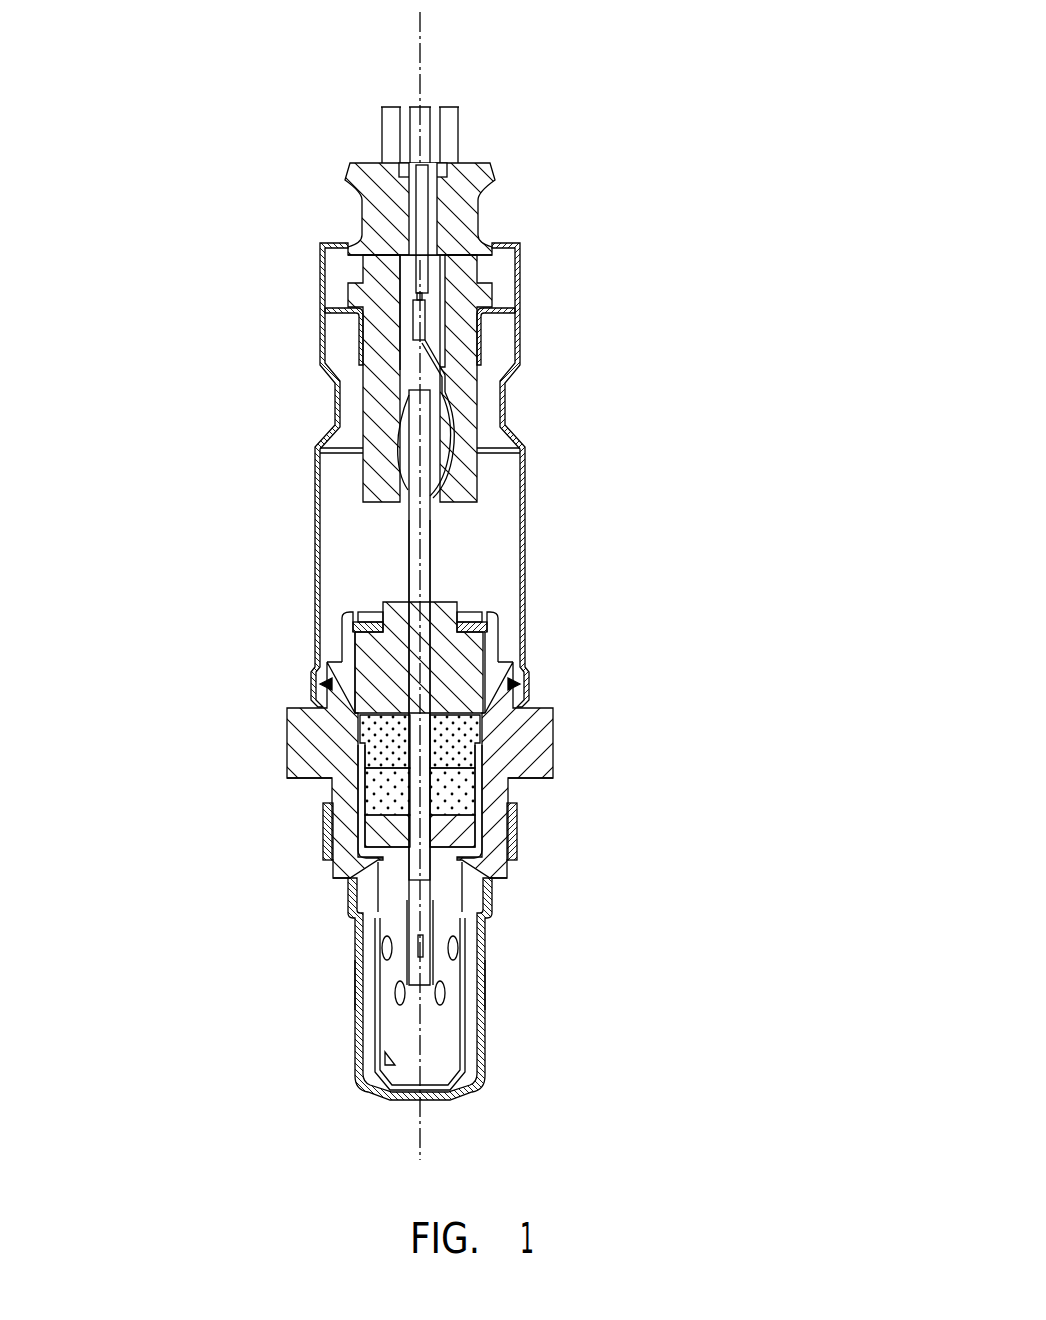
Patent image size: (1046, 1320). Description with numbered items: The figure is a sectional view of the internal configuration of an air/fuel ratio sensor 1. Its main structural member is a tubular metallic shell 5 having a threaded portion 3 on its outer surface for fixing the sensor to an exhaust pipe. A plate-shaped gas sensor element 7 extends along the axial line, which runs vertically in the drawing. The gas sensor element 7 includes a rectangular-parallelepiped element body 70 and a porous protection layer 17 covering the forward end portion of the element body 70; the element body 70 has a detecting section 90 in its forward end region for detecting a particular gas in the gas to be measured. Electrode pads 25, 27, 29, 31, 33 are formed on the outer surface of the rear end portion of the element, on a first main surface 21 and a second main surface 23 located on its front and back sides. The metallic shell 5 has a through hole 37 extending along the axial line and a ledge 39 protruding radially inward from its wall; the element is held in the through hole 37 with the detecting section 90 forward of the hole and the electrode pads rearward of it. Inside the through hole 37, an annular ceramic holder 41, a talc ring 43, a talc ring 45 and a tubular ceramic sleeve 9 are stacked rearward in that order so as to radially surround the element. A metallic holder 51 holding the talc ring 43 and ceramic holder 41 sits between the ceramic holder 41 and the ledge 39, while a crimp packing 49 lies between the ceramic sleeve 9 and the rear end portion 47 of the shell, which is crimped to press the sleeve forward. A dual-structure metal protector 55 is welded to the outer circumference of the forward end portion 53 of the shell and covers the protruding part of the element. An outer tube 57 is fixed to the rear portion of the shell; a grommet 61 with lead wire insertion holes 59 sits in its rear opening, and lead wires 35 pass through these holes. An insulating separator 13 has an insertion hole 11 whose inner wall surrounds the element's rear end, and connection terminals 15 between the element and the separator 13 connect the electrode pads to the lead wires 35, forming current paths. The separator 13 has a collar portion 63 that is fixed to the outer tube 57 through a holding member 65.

The air/fuel ratio sensor 1 is at (598, 147).
The threaded portion 3 is at (333, 831).
The metallic shell 5 is at (323, 738).
The gas sensor element 7 is at (482, 768).
The ceramic sleeve 9 is at (462, 683).
The insertion hole 11 is at (406, 374).
The separator 13 is at (377, 427).
The connection terminal 15 is at (443, 372).
The porous protection layer 17 is at (478, 904).
The first main surface 21 is at (325, 779).
The second main surface 23 is at (455, 738).
The electrode pad 25 is at (306, 635).
The electrode pad 27 is at (306, 635).
The electrode pad 29 is at (410, 504).
The electrode pad 31 is at (520, 692).
The electrode pad 33 is at (429, 504).
The lead wire 35 is at (423, 108).
The through hole 37 is at (469, 981).
The ledge 39 is at (347, 870).
The ceramic holder 41 is at (457, 834).
The talc ring 43 is at (467, 791).
The talc ring 45 is at (390, 733).
The rear end portion 47 is at (468, 615).
The crimp packing 49 is at (488, 628).
The metallic holder 51 is at (480, 903).
The forward end portion 53 is at (484, 925).
The protector 55 is at (484, 968).
The outer tube 57 is at (512, 410).
The lead wire insertion hole 59 is at (420, 205).
The grommet 61 is at (453, 212).
The collar portion 63 is at (358, 291).
The holding member 65 is at (520, 310).
The element body 70 is at (410, 928).
The detecting section 90 is at (410, 945).